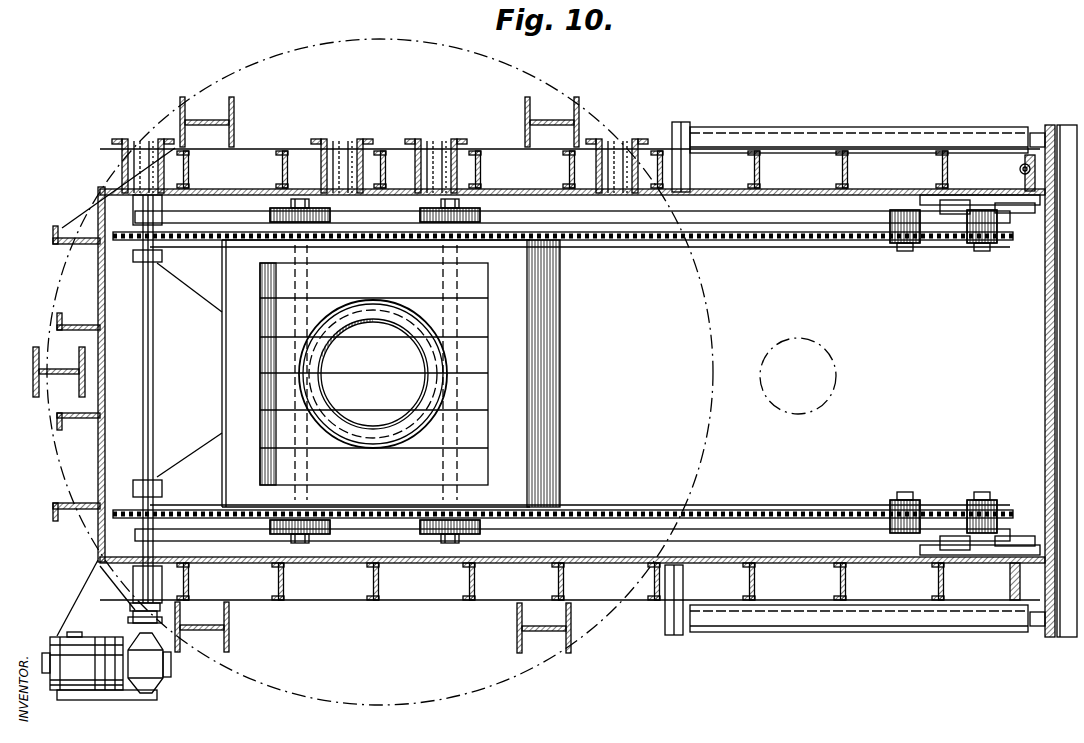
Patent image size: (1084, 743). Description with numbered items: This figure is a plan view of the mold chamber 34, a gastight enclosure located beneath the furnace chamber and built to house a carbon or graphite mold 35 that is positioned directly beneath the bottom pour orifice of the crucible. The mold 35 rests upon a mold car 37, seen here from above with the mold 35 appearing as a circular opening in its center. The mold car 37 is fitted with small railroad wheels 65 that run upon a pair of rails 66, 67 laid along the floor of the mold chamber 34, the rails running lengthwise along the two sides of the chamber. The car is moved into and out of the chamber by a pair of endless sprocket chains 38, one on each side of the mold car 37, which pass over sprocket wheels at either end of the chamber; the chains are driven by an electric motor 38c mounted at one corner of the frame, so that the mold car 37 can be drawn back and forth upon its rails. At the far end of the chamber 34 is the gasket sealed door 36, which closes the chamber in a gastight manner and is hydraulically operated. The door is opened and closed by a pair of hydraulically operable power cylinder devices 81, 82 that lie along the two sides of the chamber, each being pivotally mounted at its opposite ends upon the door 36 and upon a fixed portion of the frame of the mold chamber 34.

The mold chamber 34 is at (100, 265).
The mold 35 is at (378, 440).
The gasket sealed door 36 is at (1062, 355).
The mold car 37 is at (243, 351).
The sprocket chain 38 is at (630, 242).
The motor 38c is at (125, 697).
The railroad wheels 65 is at (440, 213).
The rail 66 is at (762, 512).
The rail 67 is at (766, 232).
The hydraulically operable power cylinder device 81 is at (855, 134).
The hydraulically operable power cylinder device 82 is at (862, 632).